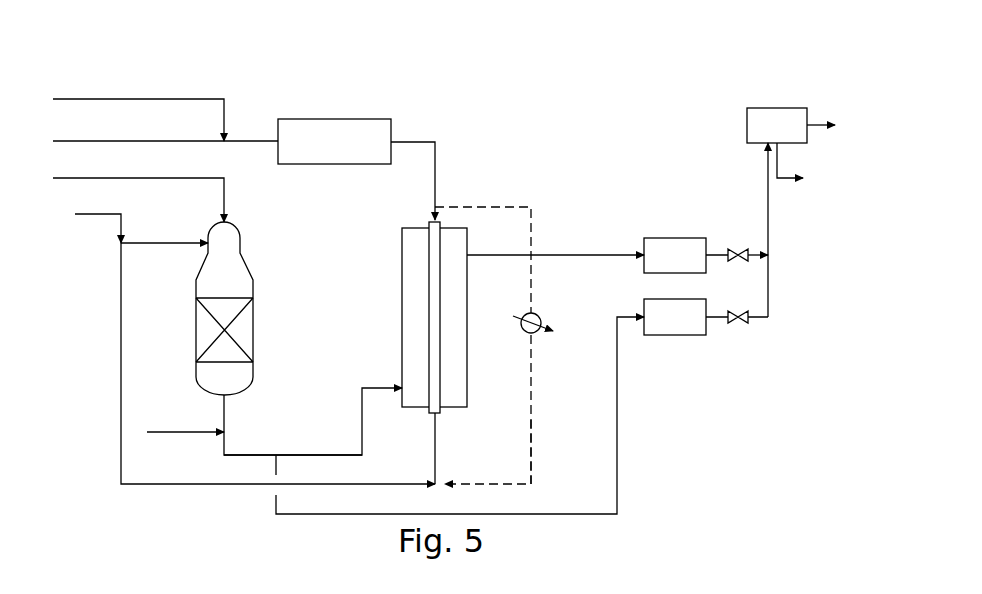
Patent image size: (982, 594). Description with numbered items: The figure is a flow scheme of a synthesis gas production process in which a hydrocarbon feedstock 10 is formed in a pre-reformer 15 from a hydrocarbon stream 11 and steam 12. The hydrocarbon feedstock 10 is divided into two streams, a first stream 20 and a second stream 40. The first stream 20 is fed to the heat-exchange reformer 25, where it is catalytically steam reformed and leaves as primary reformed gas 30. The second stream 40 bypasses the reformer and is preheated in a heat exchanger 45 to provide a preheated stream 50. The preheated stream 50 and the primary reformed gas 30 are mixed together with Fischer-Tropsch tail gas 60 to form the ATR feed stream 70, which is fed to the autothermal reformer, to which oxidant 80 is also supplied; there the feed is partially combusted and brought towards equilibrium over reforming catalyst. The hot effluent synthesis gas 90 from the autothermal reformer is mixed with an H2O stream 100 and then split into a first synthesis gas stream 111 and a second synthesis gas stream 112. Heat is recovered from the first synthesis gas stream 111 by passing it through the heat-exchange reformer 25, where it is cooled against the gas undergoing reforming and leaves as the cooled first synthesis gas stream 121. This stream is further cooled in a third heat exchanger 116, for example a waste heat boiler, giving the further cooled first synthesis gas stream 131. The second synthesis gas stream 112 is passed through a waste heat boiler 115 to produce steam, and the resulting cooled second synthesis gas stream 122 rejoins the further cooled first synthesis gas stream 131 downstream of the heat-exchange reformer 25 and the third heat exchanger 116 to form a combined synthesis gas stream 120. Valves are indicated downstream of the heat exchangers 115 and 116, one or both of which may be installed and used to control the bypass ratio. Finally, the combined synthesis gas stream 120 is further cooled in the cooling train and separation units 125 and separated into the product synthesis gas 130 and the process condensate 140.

The hydrocarbon feedstock 10 is at (413, 171).
The hydrocarbon stream 11 is at (165, 130).
The steam 12 is at (138, 109).
The pre-reformer 15 is at (334, 141).
The first stream 20 is at (434, 305).
The heat-exchange reformer 25 is at (402, 292).
The primary reformed gas 30 is at (450, 448).
The second stream 40 is at (483, 335).
The heat exchanger 45 is at (540, 316).
The preheated stream 50 is at (544, 452).
The Fischer-Tropsch tail gas 60 is at (255, 340).
The ATR feed stream 70 is at (164, 234).
The oxidant 80 is at (138, 190).
The hot effluent synthesis gas 90 is at (299, 338).
The H2O stream 100 is at (185, 421).
The first synthesis gas stream 111 is at (293, 443).
The second synthesis gas stream 112 is at (460, 415).
The waste heat boiler 115 is at (675, 317).
The third heat exchanger 116 is at (675, 255).
The combined synthesis gas stream 120 is at (787, 230).
The cooled first synthesis gas stream 121 is at (555, 245).
The cooled second synthesis gas stream 122 is at (737, 326).
The cooling train and separation units 125 is at (777, 125).
The product synthesis gas 130 is at (837, 124).
The further cooled first synthesis gas stream 131 is at (737, 245).
The process condensate 140 is at (809, 166).